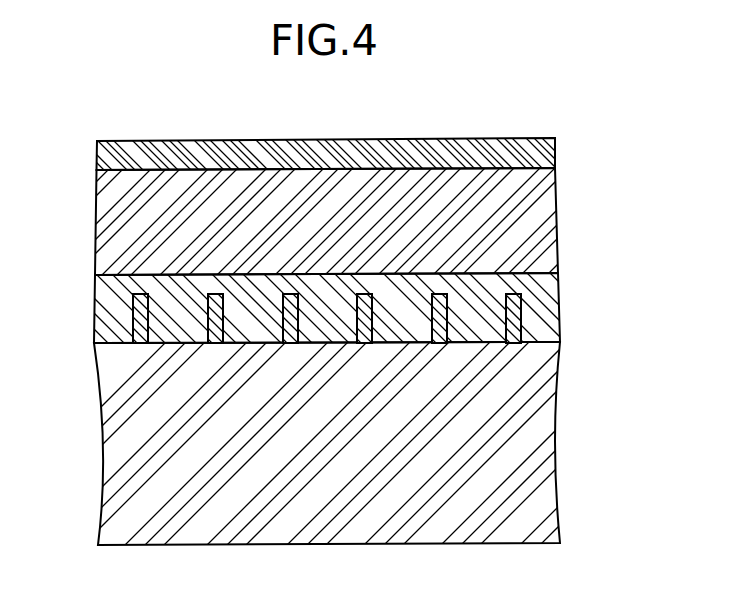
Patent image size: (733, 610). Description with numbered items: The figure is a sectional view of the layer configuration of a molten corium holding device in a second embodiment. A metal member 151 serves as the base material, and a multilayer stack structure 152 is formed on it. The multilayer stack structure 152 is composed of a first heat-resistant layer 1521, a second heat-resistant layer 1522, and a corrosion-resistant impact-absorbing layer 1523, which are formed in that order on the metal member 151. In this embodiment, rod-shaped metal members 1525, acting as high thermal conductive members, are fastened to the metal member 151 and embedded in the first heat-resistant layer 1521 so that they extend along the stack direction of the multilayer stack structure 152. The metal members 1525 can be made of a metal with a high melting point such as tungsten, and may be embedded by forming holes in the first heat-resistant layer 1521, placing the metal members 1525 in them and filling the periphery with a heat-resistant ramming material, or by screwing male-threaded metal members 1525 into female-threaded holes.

The metal member 151 is at (540, 500).
The multilayer stack structure 152 is at (347, 242).
The first heat-resistant layer 1521 is at (346, 310).
The second heat-resistant layer 1522 is at (538, 235).
The corrosion-resistant impact-absorbing layer 1523 is at (538, 158).
The rod-shaped metal member 1525 is at (143, 322).